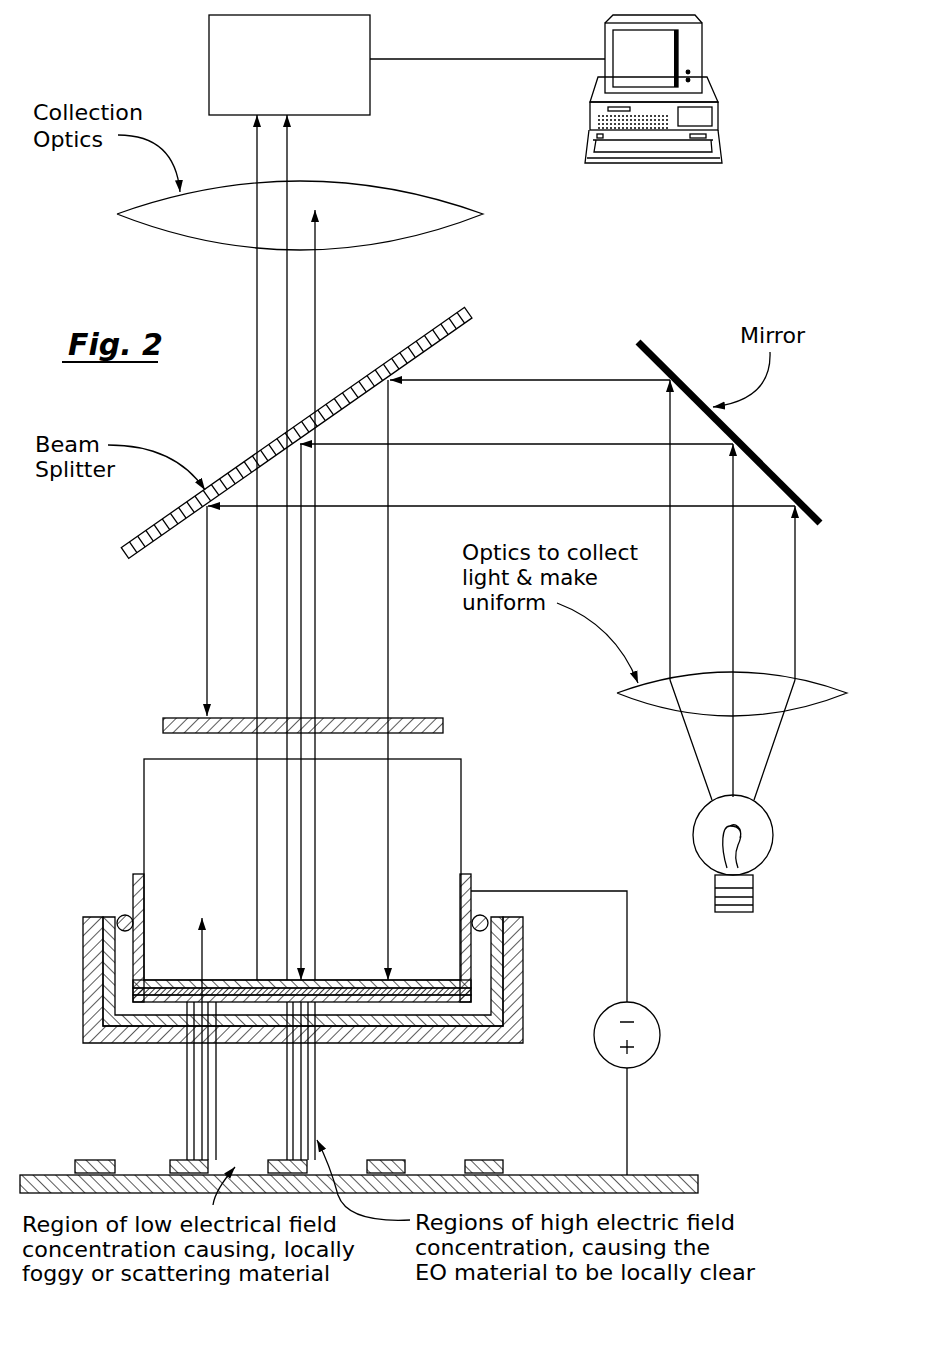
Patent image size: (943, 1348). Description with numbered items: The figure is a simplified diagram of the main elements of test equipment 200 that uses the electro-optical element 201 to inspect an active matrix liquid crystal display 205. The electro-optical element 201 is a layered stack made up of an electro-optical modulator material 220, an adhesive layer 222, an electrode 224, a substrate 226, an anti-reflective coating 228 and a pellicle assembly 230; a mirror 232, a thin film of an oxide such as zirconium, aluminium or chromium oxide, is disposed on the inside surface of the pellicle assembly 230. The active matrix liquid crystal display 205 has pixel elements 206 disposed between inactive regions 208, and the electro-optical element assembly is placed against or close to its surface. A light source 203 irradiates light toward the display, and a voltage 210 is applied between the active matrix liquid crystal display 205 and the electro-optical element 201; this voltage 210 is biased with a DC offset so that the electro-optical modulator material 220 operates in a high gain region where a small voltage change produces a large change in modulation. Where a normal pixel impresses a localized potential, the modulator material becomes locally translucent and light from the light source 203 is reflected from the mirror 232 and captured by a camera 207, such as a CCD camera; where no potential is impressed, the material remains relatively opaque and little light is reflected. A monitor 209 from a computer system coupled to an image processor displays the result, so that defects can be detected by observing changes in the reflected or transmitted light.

The test equipment 200 is at (697, 263).
The electro-optical element 201 is at (472, 800).
The light source 203 is at (773, 849).
The active matrix liquid crystal display 205 is at (695, 1163).
The pixel elements 206 is at (170, 1167).
The camera 207 is at (197, 60).
The inactive regions 208 is at (443, 1130).
The monitor 209 is at (703, 59).
The voltage 210 is at (655, 1013).
The electro-optical modulator material 220 is at (437, 1003).
The adhesive layer 222 is at (455, 990).
The electrode 224 is at (128, 878).
The substrate 226 is at (143, 787).
The anti-reflective coating 228 is at (160, 714).
The pellicle assembly 230 is at (130, 1053).
The mirror 232 is at (117, 917).